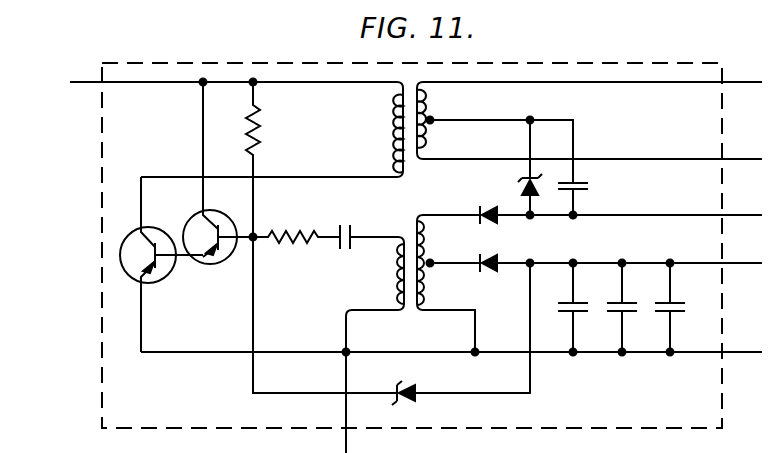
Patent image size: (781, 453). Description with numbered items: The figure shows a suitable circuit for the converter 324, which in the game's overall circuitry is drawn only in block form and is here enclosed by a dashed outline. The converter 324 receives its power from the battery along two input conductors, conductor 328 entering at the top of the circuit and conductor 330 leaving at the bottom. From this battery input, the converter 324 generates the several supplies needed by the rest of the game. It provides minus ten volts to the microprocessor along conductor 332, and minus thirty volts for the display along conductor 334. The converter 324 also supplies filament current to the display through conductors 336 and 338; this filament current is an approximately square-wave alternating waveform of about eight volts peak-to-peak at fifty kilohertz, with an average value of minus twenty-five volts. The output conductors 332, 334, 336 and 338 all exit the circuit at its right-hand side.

The converter 324 is at (608, 430).
The conductor 328 is at (86, 80).
The conductor 330 is at (345, 436).
The conductor 332 is at (746, 262).
The conductor 334 is at (746, 214).
The conductor 336 is at (748, 158).
The conductor 338 is at (750, 81).